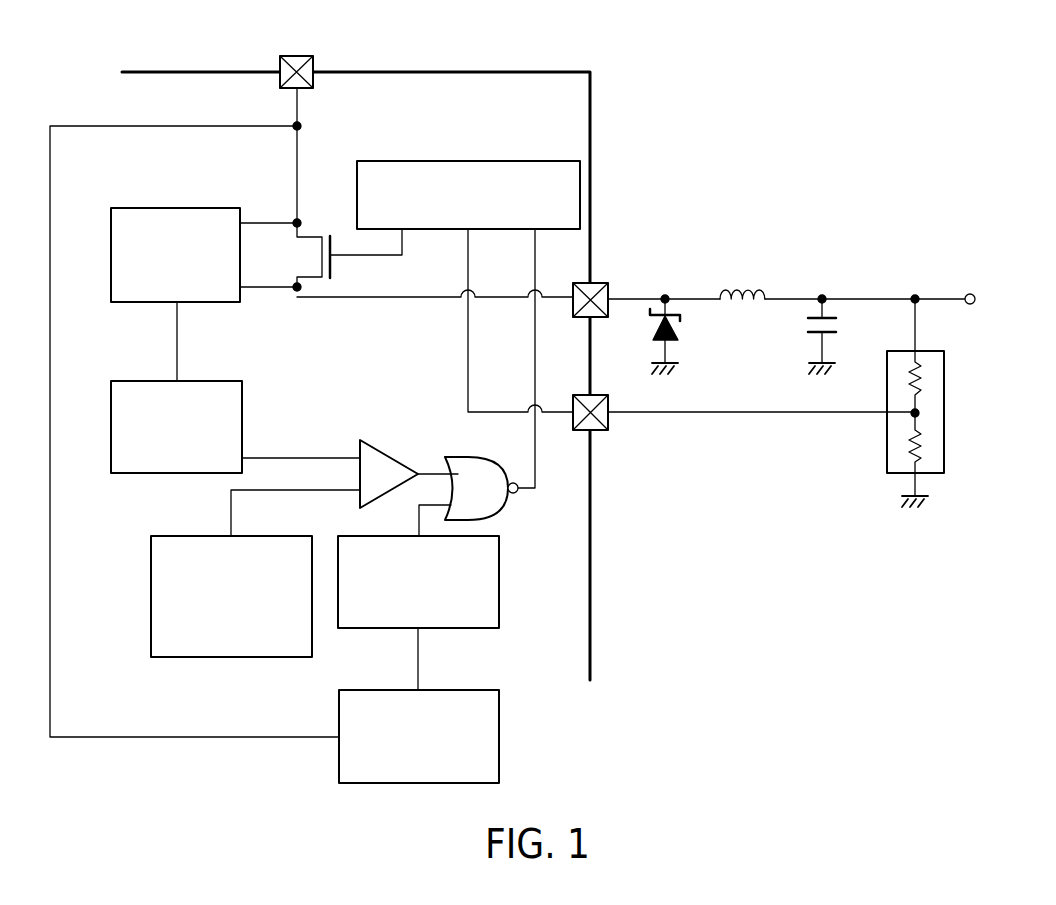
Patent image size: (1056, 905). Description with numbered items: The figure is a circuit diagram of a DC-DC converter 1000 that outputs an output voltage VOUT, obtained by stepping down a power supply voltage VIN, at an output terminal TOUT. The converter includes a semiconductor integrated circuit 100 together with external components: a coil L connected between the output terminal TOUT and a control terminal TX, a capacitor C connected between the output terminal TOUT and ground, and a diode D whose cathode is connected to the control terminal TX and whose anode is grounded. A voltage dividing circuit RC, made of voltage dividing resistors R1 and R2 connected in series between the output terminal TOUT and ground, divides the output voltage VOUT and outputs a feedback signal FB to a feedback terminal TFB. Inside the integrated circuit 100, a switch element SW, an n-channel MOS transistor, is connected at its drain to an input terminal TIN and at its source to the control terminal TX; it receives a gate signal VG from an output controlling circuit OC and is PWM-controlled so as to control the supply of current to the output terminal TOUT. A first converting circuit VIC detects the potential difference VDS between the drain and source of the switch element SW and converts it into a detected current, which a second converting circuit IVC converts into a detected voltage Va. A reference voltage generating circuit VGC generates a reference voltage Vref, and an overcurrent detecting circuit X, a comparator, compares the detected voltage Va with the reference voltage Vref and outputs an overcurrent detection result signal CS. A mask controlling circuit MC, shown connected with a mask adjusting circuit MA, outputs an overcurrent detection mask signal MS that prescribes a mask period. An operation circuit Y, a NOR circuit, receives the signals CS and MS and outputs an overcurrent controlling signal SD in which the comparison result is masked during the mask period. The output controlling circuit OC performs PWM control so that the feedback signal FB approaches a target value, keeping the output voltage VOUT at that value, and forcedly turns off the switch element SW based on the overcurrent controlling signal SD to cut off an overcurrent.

The semiconductor integrated circuit 100 is at (497, 72).
The DC-DC converter 1000 is at (598, 806).
The power supply voltage VIN is at (216, 49).
The input terminal TIN is at (313, 62).
The first converting circuit VIC is at (177, 206).
The switch element SW is at (312, 237).
The potential difference VDS is at (312, 259).
The gate signal VG is at (366, 258).
The output controlling circuit OC is at (468, 161).
The overcurrent controlling signal SD is at (544, 358).
The control terminal TX is at (597, 283).
The coil L is at (745, 287).
The diode D is at (678, 325).
The capacitor C is at (838, 318).
The output terminal TOUT is at (968, 293).
The output voltage VOUT is at (1010, 299).
The voltage dividing circuit RC is at (952, 403).
The voltage dividing resistor R1 is at (924, 385).
The voltage dividing resistor R2 is at (924, 455).
The feedback signal FB is at (761, 397).
The feedback terminal TFB is at (608, 420).
The second converting circuit IVC is at (242, 425).
The detected voltage Va is at (301, 442).
The reference voltage Vref is at (267, 513).
The reference voltage generating circuit VGC is at (231, 658).
The overcurrent detecting circuit X is at (387, 449).
The overcurrent detection result signal CS is at (437, 462).
The operation circuit Y is at (500, 510).
The overcurrent detection mask signal MS is at (418, 520).
The mask controlling circuit MC is at (499, 583).
The mask adjusting circuit MA is at (499, 737).